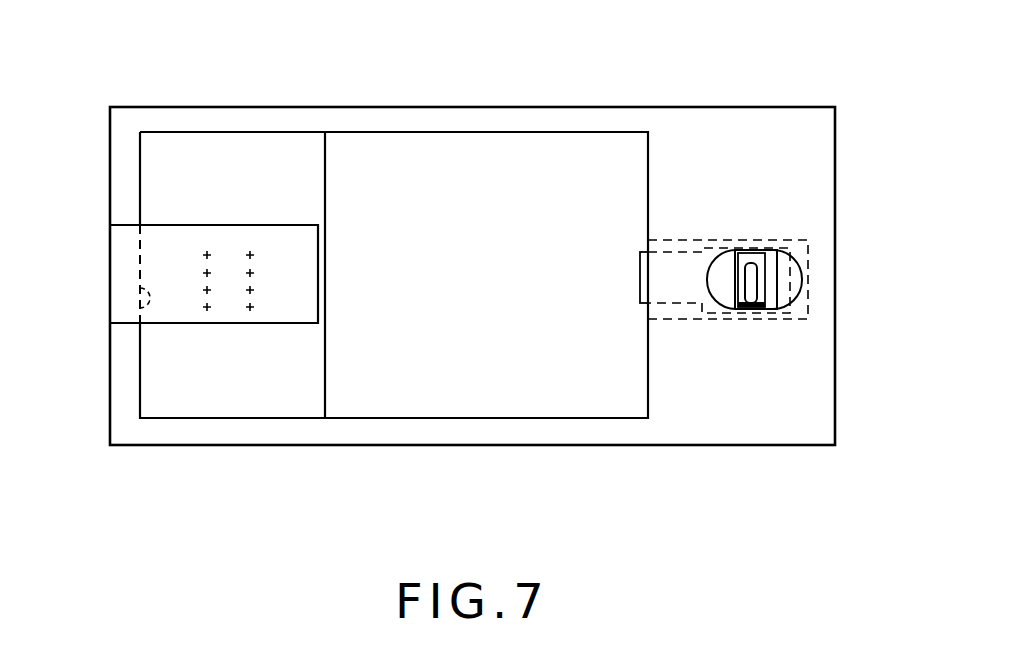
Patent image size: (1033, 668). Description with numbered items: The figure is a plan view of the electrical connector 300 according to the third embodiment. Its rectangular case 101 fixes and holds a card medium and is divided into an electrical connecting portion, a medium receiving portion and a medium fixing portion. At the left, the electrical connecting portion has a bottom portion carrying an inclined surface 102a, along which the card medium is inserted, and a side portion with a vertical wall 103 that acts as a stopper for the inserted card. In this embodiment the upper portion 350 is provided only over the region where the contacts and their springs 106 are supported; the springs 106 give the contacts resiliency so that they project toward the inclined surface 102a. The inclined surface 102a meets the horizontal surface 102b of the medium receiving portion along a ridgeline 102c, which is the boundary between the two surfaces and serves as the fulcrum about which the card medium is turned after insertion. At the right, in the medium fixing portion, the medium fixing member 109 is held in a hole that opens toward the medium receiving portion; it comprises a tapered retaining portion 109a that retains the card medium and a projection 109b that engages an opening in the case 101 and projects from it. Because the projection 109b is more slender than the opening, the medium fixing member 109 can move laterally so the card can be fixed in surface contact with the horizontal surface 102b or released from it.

The electrical connector 300 is at (799, 26).
The case 101 is at (688, 116).
The inclined surface 102a is at (280, 313).
The horizontal surface 102b is at (525, 410).
The ridgeline 102c is at (327, 196).
The vertical wall 103 is at (140, 320).
The springs 106 is at (250, 312).
The medium fixing member 109 is at (770, 257).
The tapered retaining portion 109a is at (640, 268).
The projection 109b is at (757, 310).
The upper portion 350 is at (228, 236).